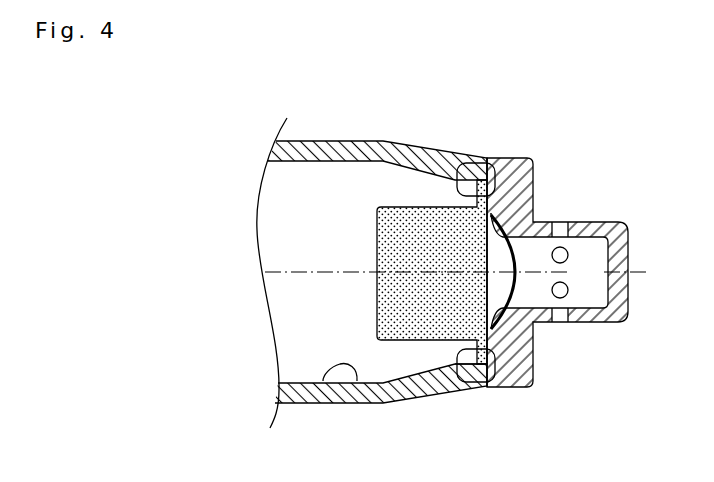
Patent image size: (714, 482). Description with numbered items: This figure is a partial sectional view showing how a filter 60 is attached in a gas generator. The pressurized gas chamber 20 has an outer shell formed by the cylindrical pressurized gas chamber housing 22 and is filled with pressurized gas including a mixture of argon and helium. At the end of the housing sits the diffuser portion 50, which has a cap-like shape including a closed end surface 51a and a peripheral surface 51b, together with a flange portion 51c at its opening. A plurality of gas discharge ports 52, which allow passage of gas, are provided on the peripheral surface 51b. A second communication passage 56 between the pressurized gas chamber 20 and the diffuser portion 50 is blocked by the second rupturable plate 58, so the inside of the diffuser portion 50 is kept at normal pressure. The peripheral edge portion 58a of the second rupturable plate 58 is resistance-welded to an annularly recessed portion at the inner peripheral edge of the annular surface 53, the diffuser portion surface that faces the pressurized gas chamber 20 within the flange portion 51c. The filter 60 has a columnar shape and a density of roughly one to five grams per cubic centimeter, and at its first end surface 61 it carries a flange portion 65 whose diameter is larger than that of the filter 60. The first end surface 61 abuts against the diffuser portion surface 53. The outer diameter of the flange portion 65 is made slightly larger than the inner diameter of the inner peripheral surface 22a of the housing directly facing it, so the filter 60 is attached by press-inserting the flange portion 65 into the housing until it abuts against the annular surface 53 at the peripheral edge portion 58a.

The pressurized gas chamber 20 is at (320, 256).
The pressurized gas chamber housing 22 is at (319, 141).
The inner peripheral surface 22a is at (357, 381).
The diffuser portion 50 is at (550, 154).
The closed end surface 51a is at (607, 245).
The peripheral surface 51b is at (598, 322).
The flange portion 51c is at (509, 160).
The gas discharge ports 52 is at (558, 321).
The annular surface (diffuser portion surface) 53 is at (462, 366).
The second communication passage 56 is at (600, 288).
The second rupturable plate 58 is at (517, 277).
The peripheral edge portion 58a is at (495, 220).
The filter 60 is at (366, 221).
The first end surface 61 is at (488, 338).
The flange portion 65 is at (458, 166).